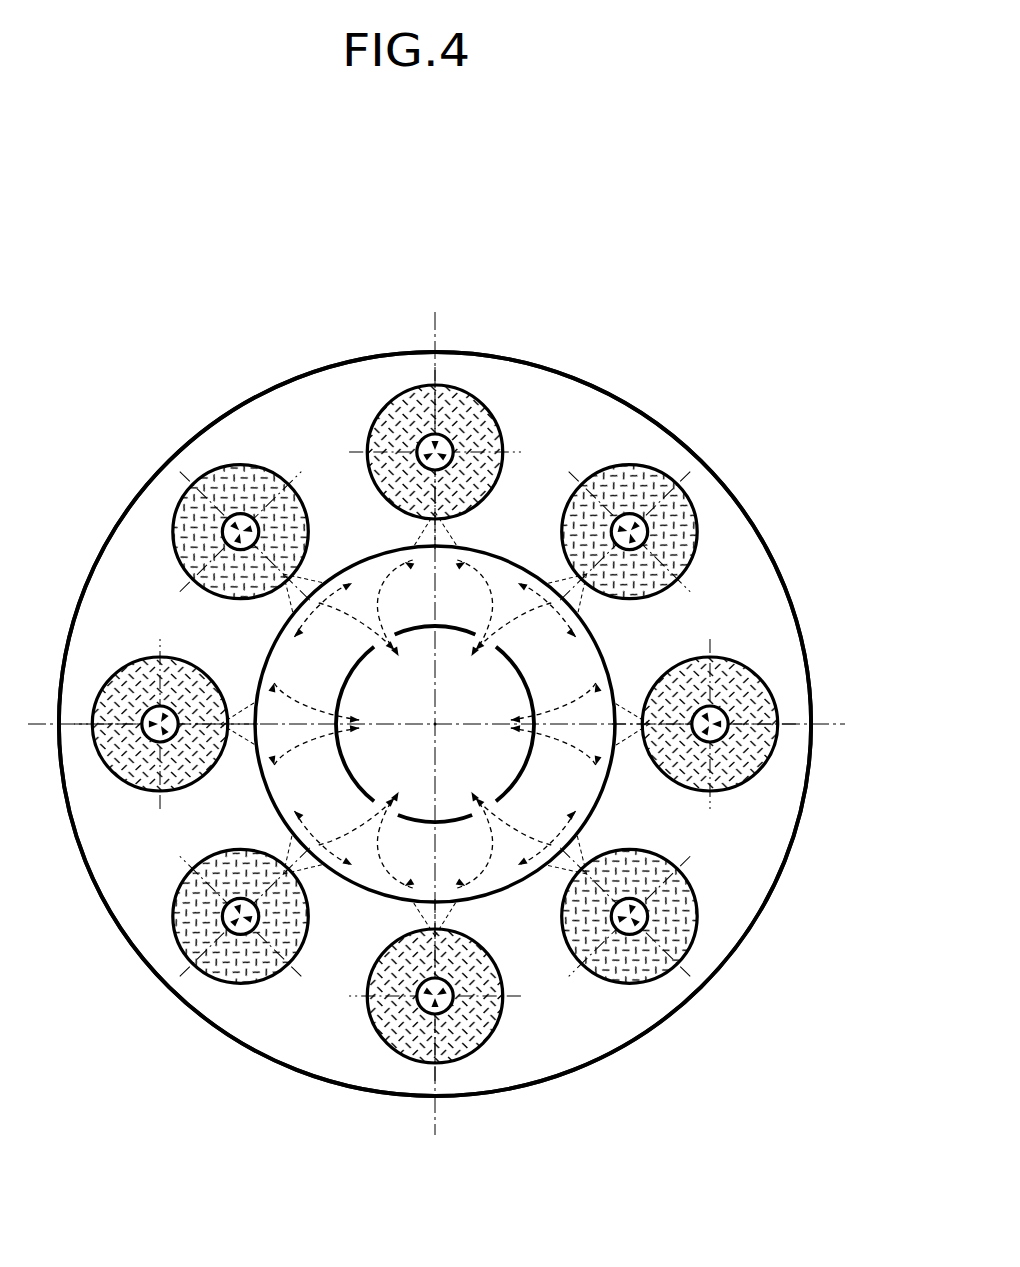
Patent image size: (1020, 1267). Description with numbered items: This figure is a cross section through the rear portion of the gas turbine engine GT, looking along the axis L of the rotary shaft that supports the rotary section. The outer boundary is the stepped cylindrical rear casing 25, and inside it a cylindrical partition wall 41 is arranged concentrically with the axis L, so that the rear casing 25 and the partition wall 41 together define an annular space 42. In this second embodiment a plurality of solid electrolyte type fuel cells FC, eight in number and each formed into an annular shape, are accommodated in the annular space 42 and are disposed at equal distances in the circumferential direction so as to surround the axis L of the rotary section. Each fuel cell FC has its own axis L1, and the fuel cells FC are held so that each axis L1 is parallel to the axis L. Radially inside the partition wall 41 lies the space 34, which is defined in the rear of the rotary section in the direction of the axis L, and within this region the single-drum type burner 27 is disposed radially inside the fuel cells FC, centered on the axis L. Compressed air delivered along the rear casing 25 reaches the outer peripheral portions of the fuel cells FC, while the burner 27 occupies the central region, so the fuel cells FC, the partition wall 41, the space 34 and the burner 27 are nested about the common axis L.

The gas turbine engine GT is at (687, 398).
The rear casing 25 is at (296, 372).
The annular space 42 is at (356, 504).
The cylindrical partition wall 41 is at (510, 560).
The burner 27 is at (525, 674).
The space 34 is at (430, 614).
The solid electrolyte type fuel cell FC is at (466, 390).
The axis of the solid electrolyte type fuel cell L1 is at (426, 448).
The axis L is at (435, 722).